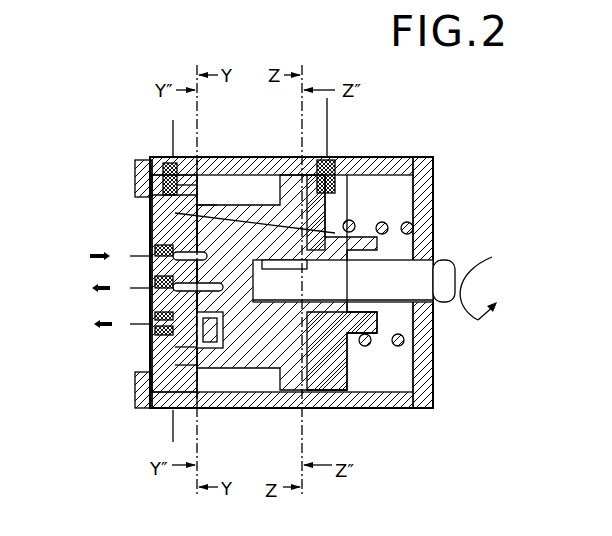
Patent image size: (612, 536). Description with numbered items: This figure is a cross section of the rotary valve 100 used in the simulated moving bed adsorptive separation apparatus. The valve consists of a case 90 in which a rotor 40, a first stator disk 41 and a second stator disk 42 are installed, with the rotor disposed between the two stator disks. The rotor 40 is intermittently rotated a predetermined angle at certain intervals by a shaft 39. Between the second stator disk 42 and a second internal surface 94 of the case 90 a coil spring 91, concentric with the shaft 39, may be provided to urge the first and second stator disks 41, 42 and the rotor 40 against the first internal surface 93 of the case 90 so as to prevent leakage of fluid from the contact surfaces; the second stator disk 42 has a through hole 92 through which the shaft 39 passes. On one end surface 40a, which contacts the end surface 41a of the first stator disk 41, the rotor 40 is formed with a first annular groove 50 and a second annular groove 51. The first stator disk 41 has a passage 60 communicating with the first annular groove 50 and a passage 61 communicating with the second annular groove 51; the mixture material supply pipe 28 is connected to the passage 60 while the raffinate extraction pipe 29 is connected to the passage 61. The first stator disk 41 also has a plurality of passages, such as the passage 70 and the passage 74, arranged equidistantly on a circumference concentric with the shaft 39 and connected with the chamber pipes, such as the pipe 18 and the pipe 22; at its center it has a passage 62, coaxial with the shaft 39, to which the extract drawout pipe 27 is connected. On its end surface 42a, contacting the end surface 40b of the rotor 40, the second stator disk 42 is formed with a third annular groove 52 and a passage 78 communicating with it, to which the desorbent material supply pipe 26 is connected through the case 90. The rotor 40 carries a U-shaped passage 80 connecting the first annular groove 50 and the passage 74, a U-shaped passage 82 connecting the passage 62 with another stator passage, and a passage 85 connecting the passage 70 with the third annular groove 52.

The rotary valve 100 is at (440, 162).
The pipe 18 is at (173, 130).
The pipe 22 is at (173, 432).
The case 90 is at (433, 380).
The first stator disk 41 is at (197, 418).
The end surface of the first stator disk 41a is at (145, 160).
The passage 74 is at (140, 373).
The first internal surface 93 is at (142, 165).
The passage 70 is at (165, 200).
The first annular groove 50 is at (176, 244).
The passage 60 is at (168, 255).
The mixture material supply pipe 28 is at (135, 256).
The extract drawout pipe 27 is at (128, 288).
The raffinate extraction pipe 29 is at (130, 324).
The passage 62 is at (150, 330).
The passage 61 is at (150, 348).
The rotor 40 is at (277, 413).
The end surface of the rotor 40a is at (213, 160).
The end surface of the rotor 40b is at (317, 413).
The U-shaped passage 80 is at (212, 412).
The U-shaped passage 82 is at (250, 413).
The second annular groove 51 is at (250, 160).
The desorbent material supply pipe 26 is at (327, 130).
The passage 78 is at (348, 177).
The passage 85 is at (380, 185).
The coil spring 91 is at (433, 193).
The through hole 92 is at (423, 217).
The shaft 39 is at (420, 250).
The second internal surface 94 is at (420, 330).
The third annular groove 52 is at (420, 358).
The second stator disk 42 is at (397, 413).
The end surface of the second stator disk 42a is at (347, 413).